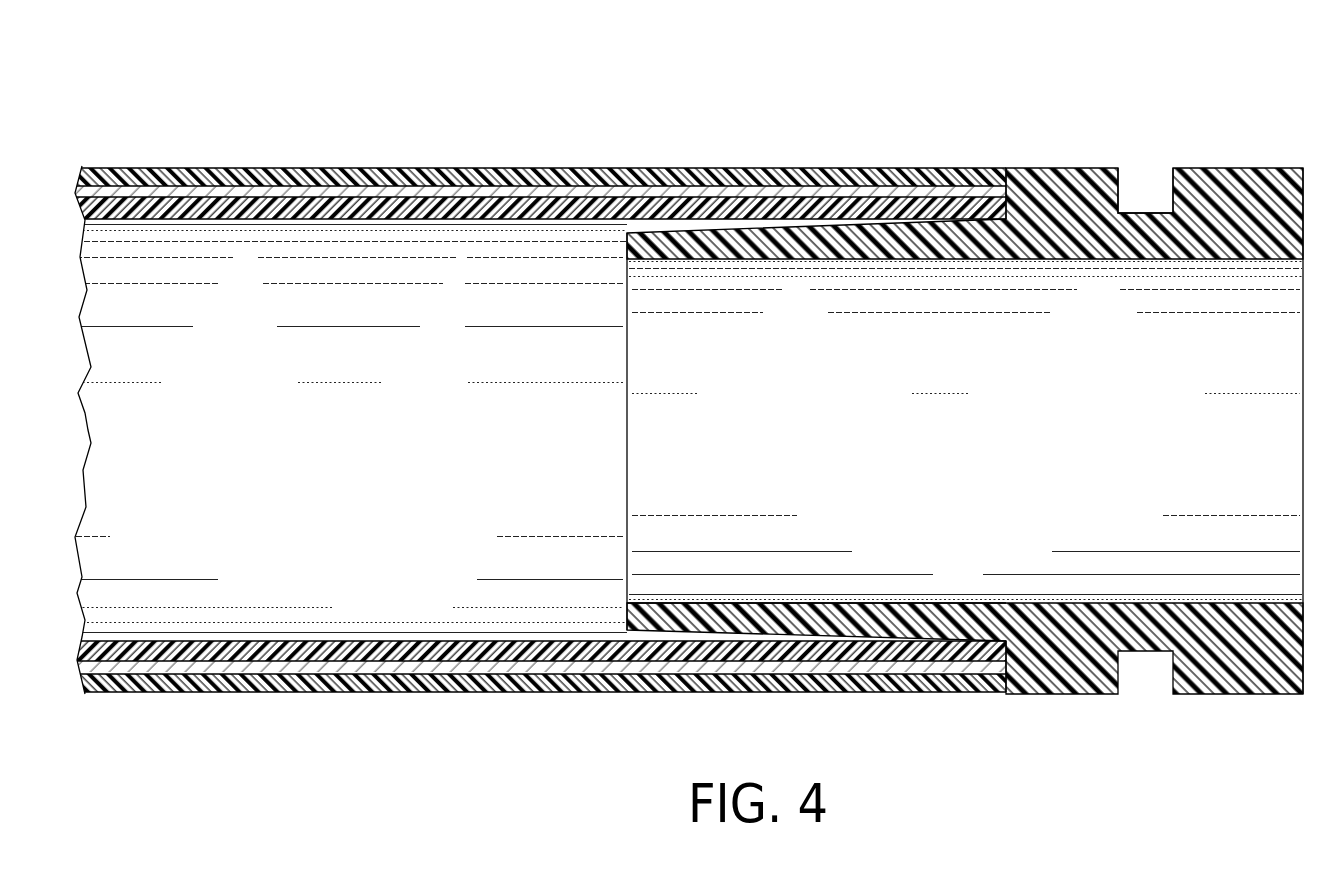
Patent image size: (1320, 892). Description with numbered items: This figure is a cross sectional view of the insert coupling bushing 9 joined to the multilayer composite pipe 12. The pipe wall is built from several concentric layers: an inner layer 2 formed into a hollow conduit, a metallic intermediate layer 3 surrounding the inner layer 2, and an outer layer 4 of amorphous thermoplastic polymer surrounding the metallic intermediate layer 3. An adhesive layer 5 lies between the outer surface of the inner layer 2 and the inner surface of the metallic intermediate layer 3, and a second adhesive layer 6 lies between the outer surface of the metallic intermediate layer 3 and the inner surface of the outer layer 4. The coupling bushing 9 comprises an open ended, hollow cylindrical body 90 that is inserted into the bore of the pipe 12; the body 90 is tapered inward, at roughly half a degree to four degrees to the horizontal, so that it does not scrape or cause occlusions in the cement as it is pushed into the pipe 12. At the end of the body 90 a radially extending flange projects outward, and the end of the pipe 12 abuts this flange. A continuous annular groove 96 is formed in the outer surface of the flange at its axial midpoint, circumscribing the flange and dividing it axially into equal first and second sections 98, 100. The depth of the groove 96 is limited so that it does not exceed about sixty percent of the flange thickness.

The inner layer 2 is at (262, 217).
The metallic intermediate layer 3 is at (345, 193).
The outer layer 4 is at (417, 180).
The adhesive layer 5 is at (517, 207).
The second adhesive layer 6 is at (578, 188).
The coupling bushing 9 is at (967, 407).
The multilayer composite pipe 12 is at (535, 377).
The hollow cylindrical body 90 is at (960, 612).
The continuous annular groove 96 is at (1138, 190).
The first section 98 is at (1253, 695).
The second section 100 is at (1052, 167).